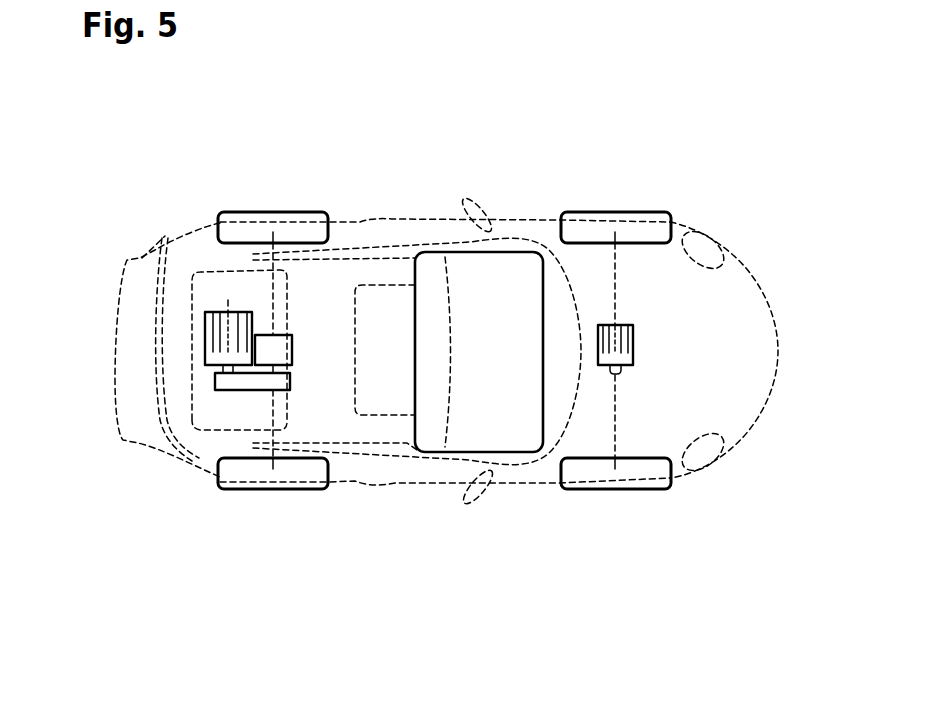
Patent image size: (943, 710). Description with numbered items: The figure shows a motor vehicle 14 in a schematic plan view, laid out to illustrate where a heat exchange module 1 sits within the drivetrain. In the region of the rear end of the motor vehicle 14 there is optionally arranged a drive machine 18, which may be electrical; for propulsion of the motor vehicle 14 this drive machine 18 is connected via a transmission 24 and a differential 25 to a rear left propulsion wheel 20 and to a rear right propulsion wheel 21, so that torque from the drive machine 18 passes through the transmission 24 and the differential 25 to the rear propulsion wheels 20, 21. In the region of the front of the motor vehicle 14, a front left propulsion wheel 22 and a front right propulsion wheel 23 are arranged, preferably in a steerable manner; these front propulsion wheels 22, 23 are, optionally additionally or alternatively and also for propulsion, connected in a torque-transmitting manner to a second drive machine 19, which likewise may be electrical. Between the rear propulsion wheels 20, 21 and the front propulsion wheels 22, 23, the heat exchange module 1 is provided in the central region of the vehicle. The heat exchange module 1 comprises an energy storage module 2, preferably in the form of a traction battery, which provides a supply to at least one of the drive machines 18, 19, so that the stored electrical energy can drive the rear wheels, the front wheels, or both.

The heat exchange module 1 is at (479, 290).
The energy storage module 2 is at (514, 251).
The motor vehicle 14 is at (760, 162).
The drive machine 18 is at (224, 318).
The second drive machine 19 is at (632, 352).
The rear left propulsion wheel 20 is at (240, 212).
The rear right propulsion wheel 21 is at (233, 486).
The front left propulsion wheel 22 is at (660, 212).
The front right propulsion wheel 23 is at (658, 487).
The transmission 24 is at (228, 376).
The differential 25 is at (267, 335).